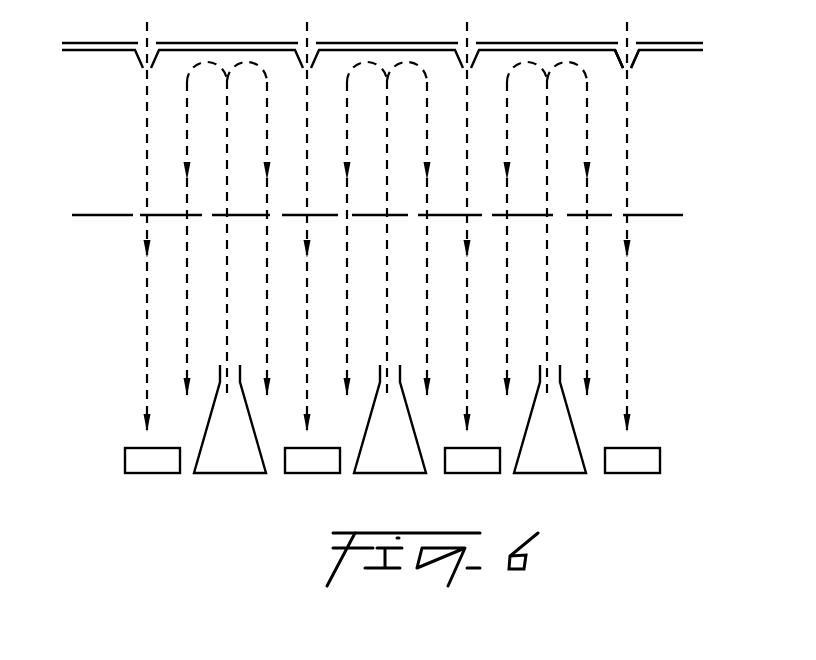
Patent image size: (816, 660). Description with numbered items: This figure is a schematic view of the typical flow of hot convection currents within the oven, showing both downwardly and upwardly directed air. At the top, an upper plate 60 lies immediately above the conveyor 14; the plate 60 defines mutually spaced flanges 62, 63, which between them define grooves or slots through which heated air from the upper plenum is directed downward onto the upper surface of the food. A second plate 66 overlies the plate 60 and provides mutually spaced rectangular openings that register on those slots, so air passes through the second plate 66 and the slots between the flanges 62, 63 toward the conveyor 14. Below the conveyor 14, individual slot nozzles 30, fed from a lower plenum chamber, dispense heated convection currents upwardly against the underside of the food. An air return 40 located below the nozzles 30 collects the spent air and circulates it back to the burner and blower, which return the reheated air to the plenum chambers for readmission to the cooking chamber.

The upper plate 60 is at (388, 37).
The second plate 66 is at (545, 43).
The flange 62 is at (633, 62).
The flange 63 is at (621, 63).
The conveyor 14 is at (662, 213).
The slot nozzle 30 is at (592, 418).
The air return 40 is at (488, 458).